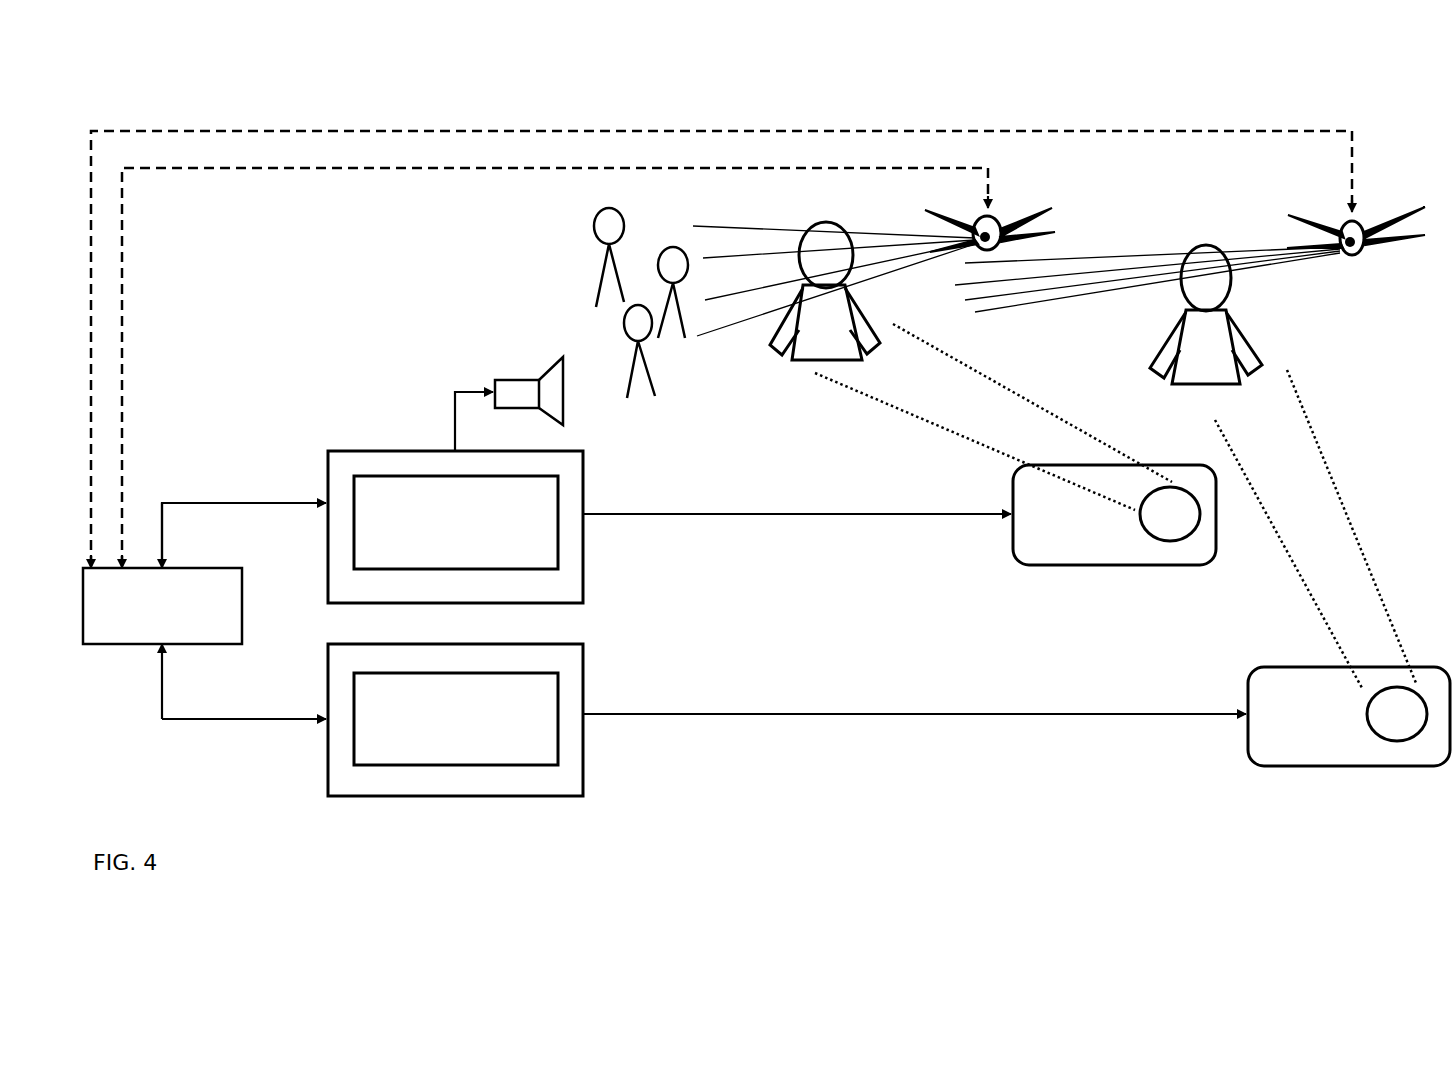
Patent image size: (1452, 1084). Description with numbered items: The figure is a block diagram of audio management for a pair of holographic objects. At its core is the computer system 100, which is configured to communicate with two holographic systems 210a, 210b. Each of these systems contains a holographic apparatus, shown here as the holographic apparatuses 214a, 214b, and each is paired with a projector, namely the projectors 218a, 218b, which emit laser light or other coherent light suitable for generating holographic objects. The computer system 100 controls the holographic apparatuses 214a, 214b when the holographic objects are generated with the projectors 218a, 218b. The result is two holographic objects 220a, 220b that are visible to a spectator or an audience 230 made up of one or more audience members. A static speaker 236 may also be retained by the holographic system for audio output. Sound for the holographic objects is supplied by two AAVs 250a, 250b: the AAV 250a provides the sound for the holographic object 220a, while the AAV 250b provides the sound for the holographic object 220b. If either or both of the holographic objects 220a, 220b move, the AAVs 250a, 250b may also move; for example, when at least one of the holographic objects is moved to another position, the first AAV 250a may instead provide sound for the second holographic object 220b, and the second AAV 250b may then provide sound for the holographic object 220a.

The computer system 100 is at (242, 579).
The holographic system 210a is at (512, 566).
The holographic system 210b is at (506, 758).
The holographic apparatus 214a is at (556, 549).
The holographic apparatus 214b is at (558, 745).
The holographic projector 218a is at (1015, 555).
The holographic projector 218b is at (1252, 760).
The holographic object 220a is at (820, 222).
The holographic object 220b is at (1204, 245).
The audience 230 is at (563, 222).
The static speaker 236 is at (520, 379).
The AAV 250a is at (992, 215).
The AAV 250b is at (1357, 220).